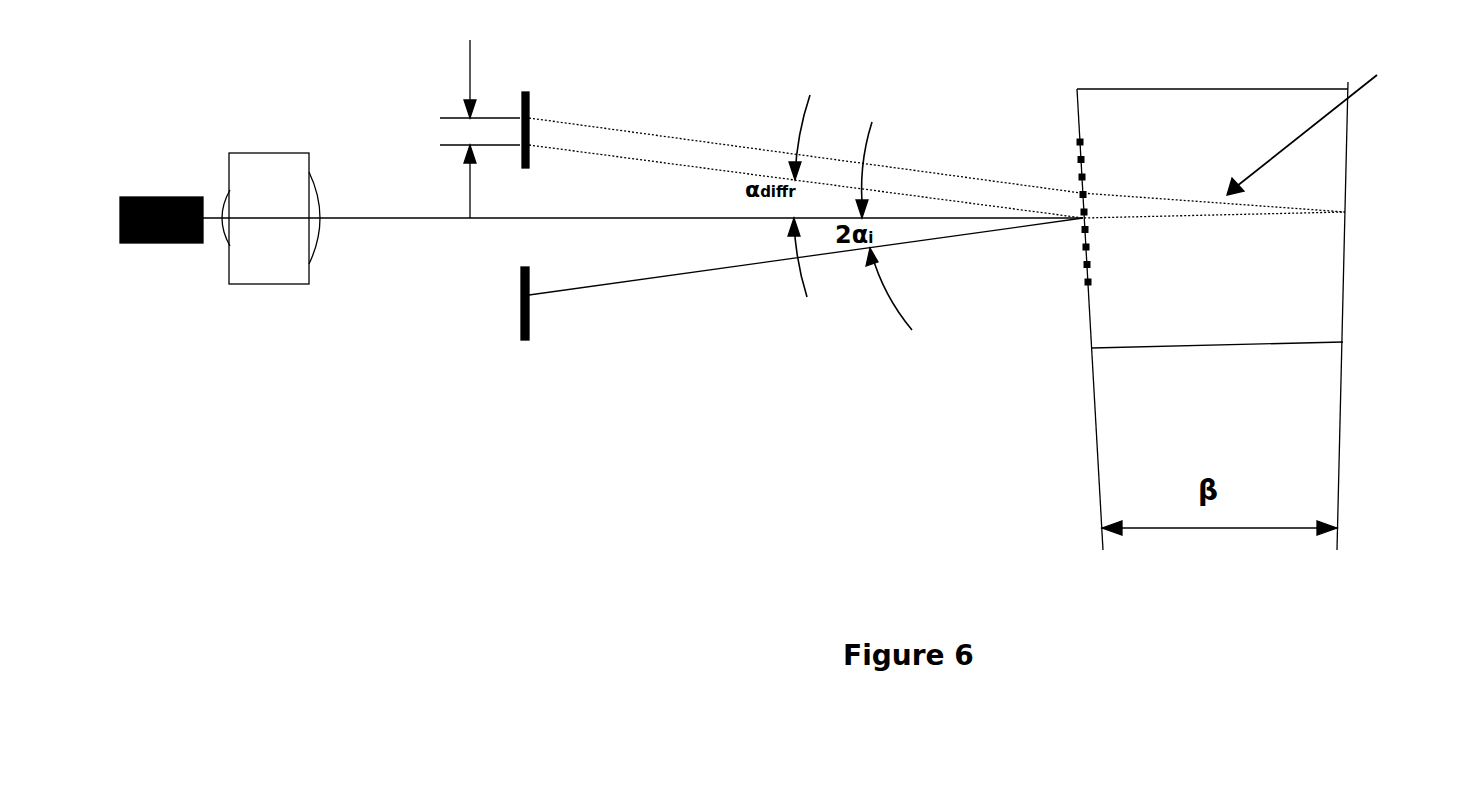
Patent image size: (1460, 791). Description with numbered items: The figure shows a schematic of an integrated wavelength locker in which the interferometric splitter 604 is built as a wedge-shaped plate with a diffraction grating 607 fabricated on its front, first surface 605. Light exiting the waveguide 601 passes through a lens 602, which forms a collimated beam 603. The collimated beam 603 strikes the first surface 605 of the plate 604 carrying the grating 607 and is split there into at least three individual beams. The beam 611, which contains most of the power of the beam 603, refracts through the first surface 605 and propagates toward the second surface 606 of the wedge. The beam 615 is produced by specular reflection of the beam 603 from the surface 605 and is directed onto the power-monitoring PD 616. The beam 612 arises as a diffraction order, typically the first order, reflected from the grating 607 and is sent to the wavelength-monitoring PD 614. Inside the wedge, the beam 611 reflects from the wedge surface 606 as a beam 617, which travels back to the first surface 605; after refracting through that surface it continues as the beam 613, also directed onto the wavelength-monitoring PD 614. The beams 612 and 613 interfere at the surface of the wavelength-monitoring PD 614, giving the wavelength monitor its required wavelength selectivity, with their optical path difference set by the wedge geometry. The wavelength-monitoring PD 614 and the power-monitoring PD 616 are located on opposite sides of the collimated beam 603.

The waveguide 601 is at (160, 263).
The lens 602 is at (271, 261).
The collimated beam 603 is at (643, 250).
The interferometric splitter 604 is at (1212, 297).
The first surface 605 is at (1006, 314).
The second surface 606 is at (1379, 316).
The diffraction grating 607 is at (1070, 171).
The beam 611 is at (1217, 311).
The beam 612 is at (937, 181).
The beam 613 is at (937, 153).
The wavelength-monitoring PD 614 is at (486, 129).
The beam 615 is at (806, 277).
The power-monitoring PD 616 is at (483, 327).
The beam 617 is at (1330, 118).